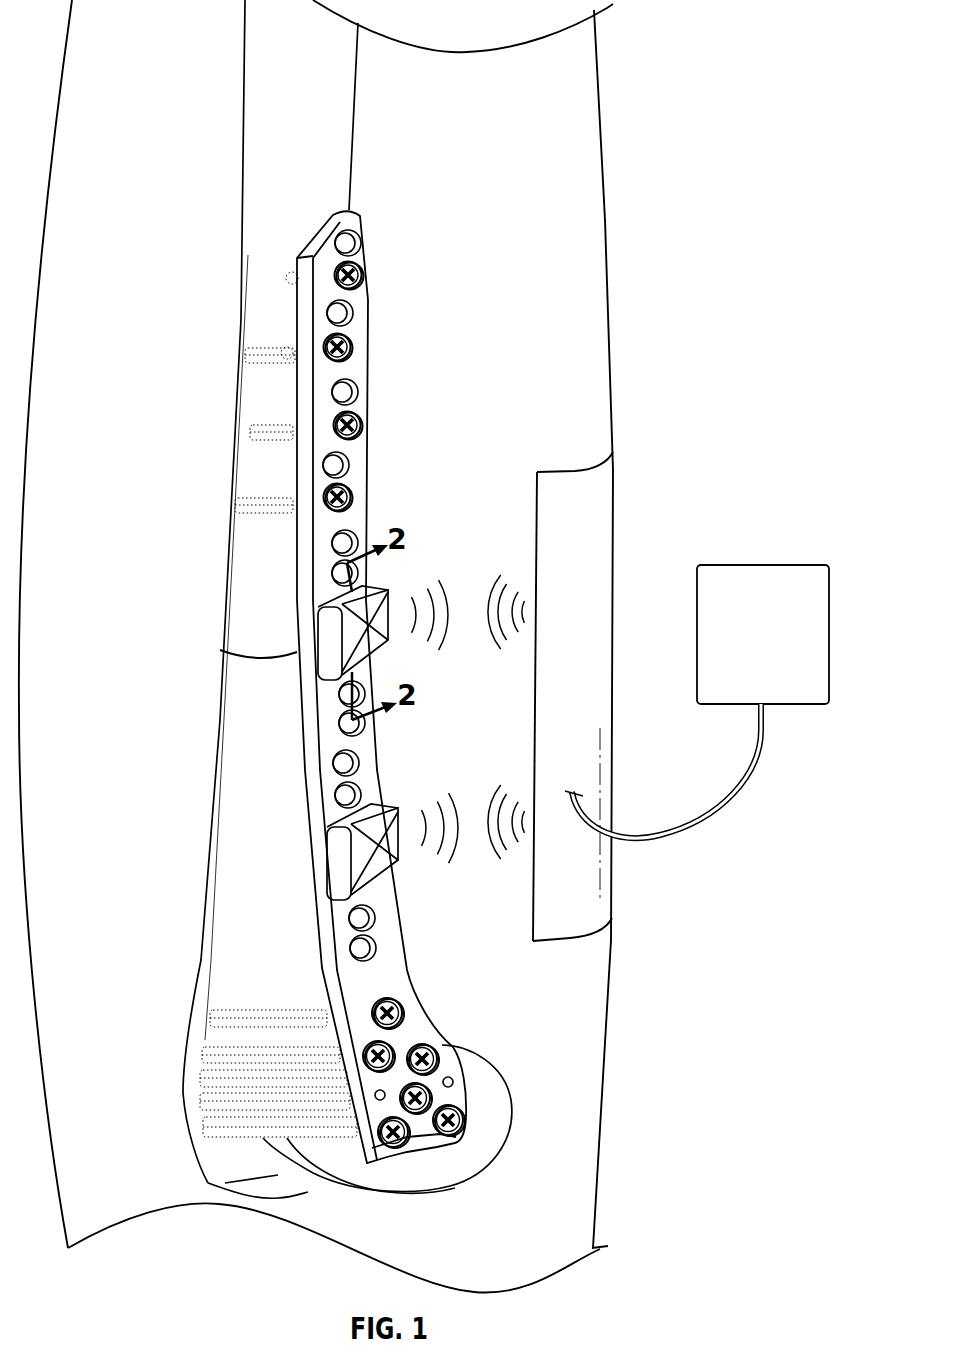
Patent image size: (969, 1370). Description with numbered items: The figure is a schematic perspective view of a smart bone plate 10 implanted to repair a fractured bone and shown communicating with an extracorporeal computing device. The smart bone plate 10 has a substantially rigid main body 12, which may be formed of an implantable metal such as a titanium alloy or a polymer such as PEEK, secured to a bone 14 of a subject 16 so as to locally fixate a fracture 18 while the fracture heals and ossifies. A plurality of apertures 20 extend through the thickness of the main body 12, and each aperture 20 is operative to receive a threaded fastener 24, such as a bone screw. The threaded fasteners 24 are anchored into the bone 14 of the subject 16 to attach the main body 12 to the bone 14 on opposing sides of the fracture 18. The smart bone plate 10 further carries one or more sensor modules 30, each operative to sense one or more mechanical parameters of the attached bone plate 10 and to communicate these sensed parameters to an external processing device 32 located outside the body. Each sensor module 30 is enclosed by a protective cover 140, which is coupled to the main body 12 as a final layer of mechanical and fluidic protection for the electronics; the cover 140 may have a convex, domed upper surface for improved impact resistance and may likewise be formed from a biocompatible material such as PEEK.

The smart bone plate 10 is at (367, 440).
The main body 12 is at (357, 497).
The bone 14 is at (313, 118).
The subject 16 is at (608, 190).
The fracture 18 is at (250, 656).
The apertures 20 is at (343, 312).
The threaded fastener 24 is at (258, 353).
The sensor module 30 is at (388, 597).
The external processing device 32 is at (780, 565).
The protective cover 140 is at (390, 642).